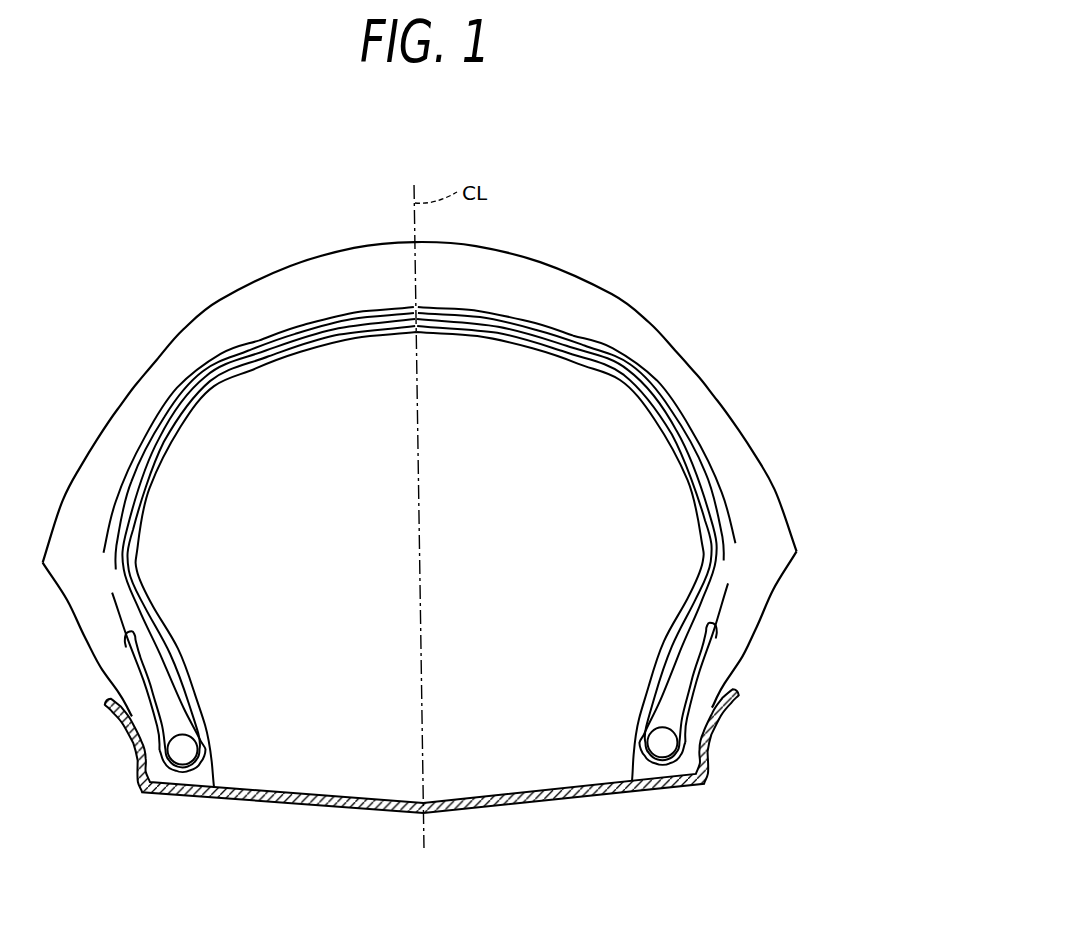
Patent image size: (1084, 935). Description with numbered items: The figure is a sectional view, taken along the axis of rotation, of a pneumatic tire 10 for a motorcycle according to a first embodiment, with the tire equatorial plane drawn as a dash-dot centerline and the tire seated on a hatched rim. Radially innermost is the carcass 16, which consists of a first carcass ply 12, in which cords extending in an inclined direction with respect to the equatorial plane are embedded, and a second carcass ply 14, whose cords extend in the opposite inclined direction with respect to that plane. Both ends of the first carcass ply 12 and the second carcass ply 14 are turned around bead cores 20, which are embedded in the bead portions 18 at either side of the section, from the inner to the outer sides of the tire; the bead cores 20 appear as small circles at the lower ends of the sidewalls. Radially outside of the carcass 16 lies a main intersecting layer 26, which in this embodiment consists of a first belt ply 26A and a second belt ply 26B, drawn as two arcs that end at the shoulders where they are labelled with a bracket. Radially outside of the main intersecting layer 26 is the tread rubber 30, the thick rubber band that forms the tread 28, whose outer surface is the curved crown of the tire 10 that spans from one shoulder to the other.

The pneumatic tire 10 is at (484, 496).
The first carcass ply 12 is at (731, 596).
The second carcass ply 14 is at (740, 664).
The carcass 16 is at (503, 544).
The bead portions 18 is at (741, 666).
The bead cores 20 is at (663, 744).
The main intersecting layer 26 is at (515, 462).
The first belt ply 26A is at (725, 562).
The second belt ply 26B is at (735, 553).
The tread 28 is at (562, 270).
The tread rubber 30 is at (417, 386).